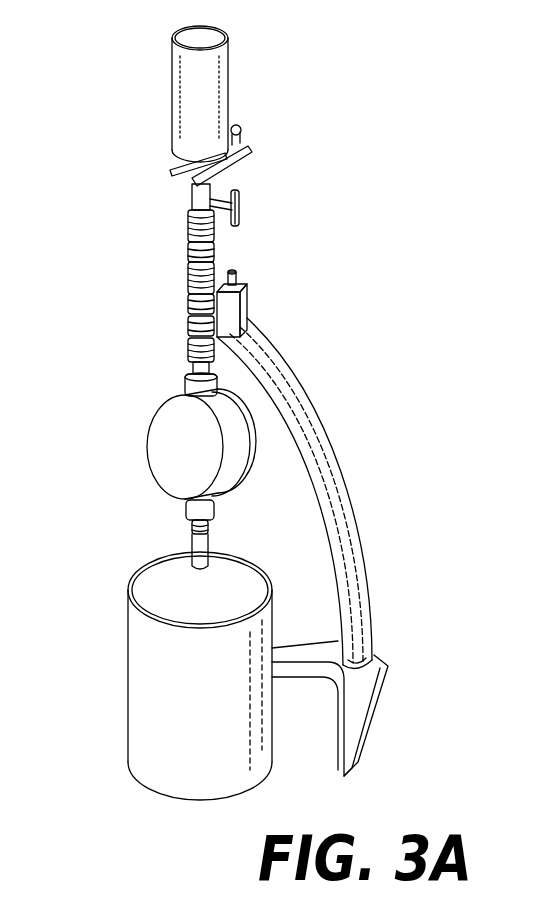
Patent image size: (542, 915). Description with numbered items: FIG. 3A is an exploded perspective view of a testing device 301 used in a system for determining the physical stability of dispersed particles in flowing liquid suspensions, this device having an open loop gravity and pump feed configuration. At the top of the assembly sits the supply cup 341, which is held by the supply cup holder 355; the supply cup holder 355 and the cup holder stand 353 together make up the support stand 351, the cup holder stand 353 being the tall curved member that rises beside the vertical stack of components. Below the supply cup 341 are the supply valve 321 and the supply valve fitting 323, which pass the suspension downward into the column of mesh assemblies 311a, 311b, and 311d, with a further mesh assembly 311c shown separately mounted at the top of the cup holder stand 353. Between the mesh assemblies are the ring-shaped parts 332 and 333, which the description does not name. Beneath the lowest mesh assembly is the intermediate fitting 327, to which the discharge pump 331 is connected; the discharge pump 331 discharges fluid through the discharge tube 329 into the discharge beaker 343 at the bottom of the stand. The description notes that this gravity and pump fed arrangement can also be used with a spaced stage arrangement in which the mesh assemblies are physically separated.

The testing device 301 is at (352, 113).
The supply cup 341 is at (172, 122).
The supply cup holder 355 is at (252, 150).
The supply valve 321 is at (185, 196).
The supply valve fitting 323 is at (190, 215).
The mesh assembly 311a is at (190, 235).
The discharge pump 331 is at (190, 258).
The mesh assembly 311b is at (190, 280).
The ring fitting 332 is at (190, 310).
The ring fitting 333 is at (190, 330).
The mesh assembly 311d is at (190, 356).
The intermediate fitting 327 is at (185, 376).
The discharge tube 329 is at (185, 505).
The discharge beaker 343 is at (128, 672).
The support stand 351 is at (332, 340).
The mesh assembly 311c is at (243, 296).
The cup holder stand 353 is at (325, 428).